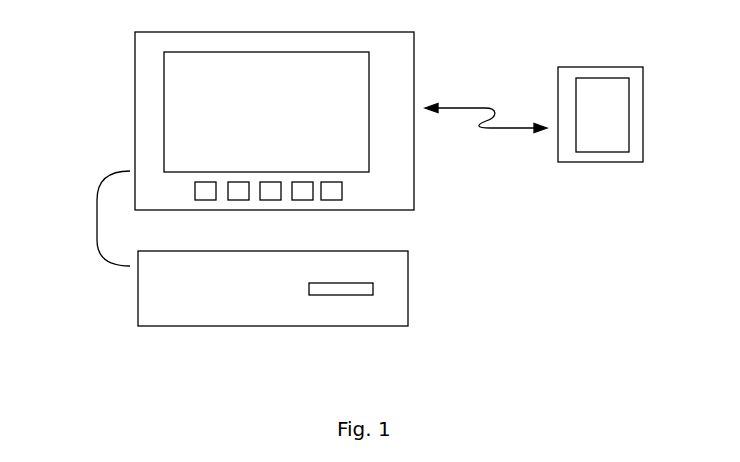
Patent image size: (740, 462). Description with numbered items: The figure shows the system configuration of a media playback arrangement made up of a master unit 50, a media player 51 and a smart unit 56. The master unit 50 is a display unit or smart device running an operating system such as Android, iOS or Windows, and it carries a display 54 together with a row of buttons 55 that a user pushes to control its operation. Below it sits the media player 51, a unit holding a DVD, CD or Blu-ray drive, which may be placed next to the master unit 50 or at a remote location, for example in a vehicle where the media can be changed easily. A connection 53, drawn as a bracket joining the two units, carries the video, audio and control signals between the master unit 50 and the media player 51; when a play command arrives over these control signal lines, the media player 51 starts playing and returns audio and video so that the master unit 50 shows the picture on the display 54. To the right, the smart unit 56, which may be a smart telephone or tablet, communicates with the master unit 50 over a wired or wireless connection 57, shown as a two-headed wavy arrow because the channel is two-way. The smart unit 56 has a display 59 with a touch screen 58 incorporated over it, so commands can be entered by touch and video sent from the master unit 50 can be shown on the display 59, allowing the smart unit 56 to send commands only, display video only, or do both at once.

The master unit 50 is at (125, 81).
The media player 51 is at (130, 305).
The connection 53 is at (96, 212).
The display 54 is at (343, 103).
The buttons 55 is at (335, 200).
The smart unit 56 is at (643, 128).
The wireless connection 57 is at (507, 133).
The touch screen 58 is at (603, 77).
The display 59 is at (628, 87).